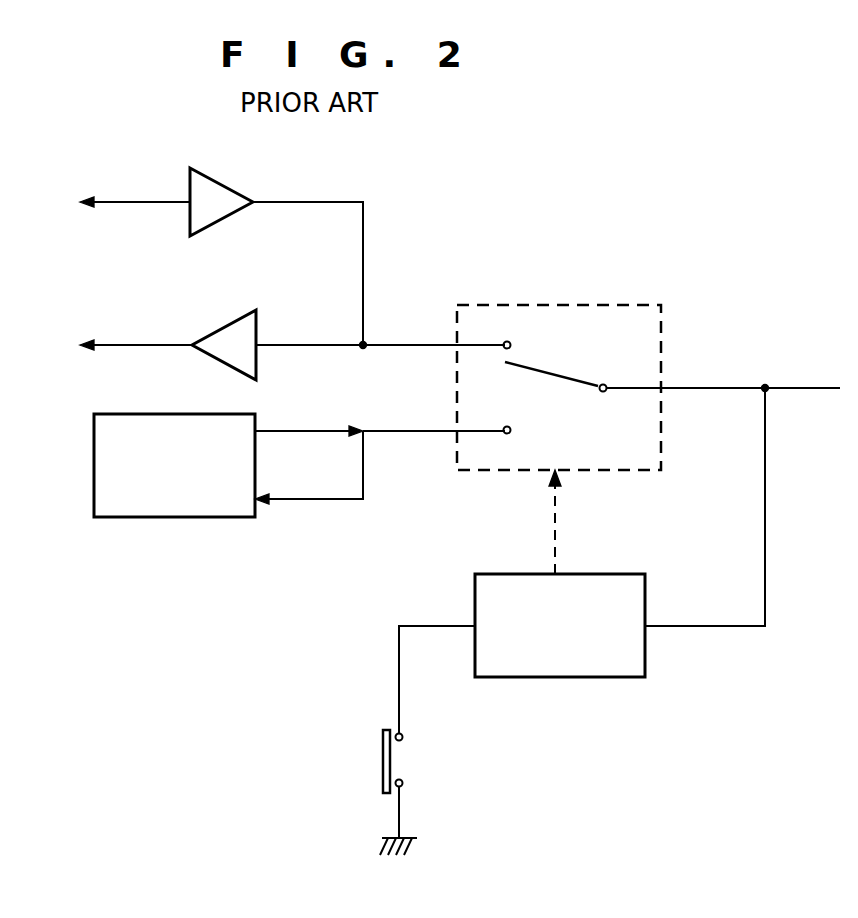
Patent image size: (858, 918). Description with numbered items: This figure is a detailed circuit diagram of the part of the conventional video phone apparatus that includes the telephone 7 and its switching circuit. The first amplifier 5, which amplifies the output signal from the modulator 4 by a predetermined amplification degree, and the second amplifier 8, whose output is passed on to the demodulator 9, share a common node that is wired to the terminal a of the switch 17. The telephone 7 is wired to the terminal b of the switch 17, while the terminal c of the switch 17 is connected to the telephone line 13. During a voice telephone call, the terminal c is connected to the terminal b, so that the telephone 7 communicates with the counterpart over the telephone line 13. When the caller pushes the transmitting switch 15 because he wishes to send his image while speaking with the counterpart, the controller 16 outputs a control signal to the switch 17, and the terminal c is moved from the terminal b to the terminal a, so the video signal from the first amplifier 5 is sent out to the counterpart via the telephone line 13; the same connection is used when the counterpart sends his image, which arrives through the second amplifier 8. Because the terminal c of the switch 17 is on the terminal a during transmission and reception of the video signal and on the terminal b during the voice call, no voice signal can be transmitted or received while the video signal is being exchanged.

The modulator 4 is at (59, 204).
The first amplifier 5 is at (218, 194).
The telephone 7 is at (176, 518).
The second amplifier 8 is at (228, 338).
The demodulator 9 is at (59, 347).
The telephone line 13 is at (804, 387).
The transmitting switch 15 is at (383, 758).
The controller 16 is at (562, 678).
The switch 17 is at (566, 304).